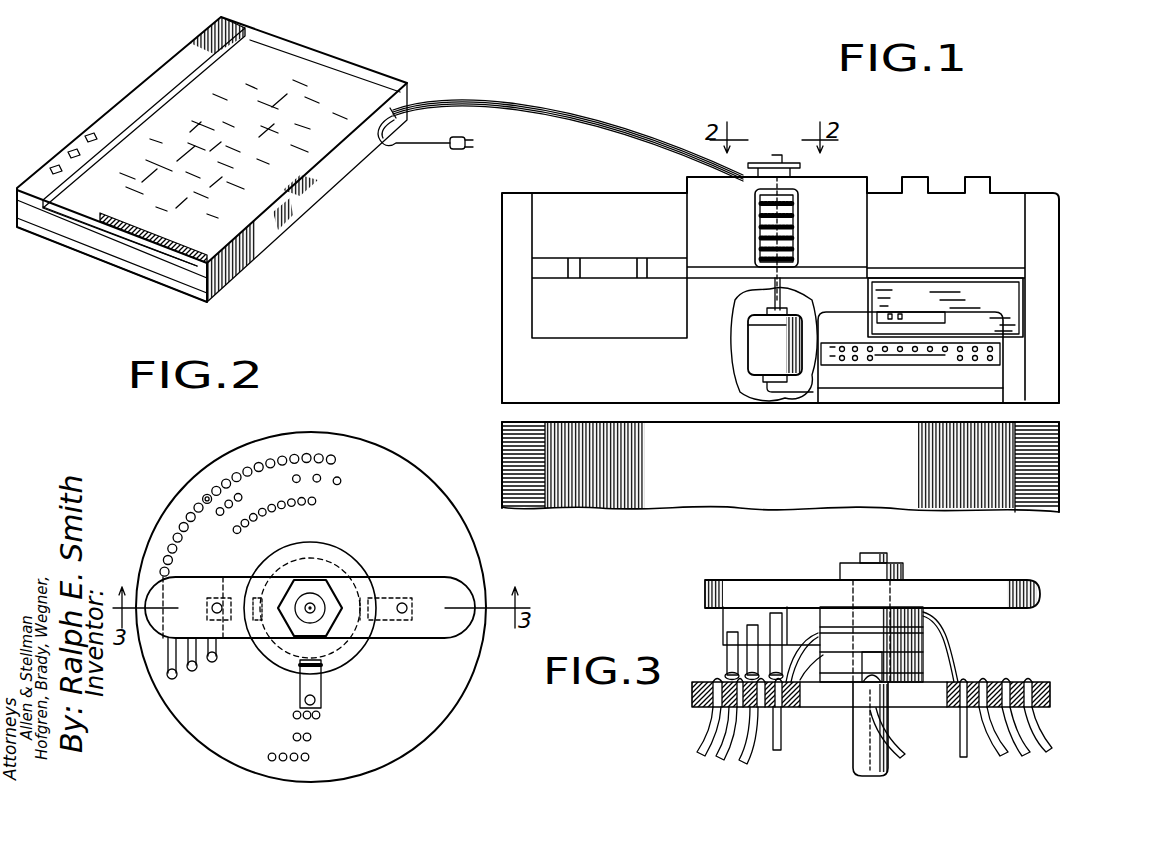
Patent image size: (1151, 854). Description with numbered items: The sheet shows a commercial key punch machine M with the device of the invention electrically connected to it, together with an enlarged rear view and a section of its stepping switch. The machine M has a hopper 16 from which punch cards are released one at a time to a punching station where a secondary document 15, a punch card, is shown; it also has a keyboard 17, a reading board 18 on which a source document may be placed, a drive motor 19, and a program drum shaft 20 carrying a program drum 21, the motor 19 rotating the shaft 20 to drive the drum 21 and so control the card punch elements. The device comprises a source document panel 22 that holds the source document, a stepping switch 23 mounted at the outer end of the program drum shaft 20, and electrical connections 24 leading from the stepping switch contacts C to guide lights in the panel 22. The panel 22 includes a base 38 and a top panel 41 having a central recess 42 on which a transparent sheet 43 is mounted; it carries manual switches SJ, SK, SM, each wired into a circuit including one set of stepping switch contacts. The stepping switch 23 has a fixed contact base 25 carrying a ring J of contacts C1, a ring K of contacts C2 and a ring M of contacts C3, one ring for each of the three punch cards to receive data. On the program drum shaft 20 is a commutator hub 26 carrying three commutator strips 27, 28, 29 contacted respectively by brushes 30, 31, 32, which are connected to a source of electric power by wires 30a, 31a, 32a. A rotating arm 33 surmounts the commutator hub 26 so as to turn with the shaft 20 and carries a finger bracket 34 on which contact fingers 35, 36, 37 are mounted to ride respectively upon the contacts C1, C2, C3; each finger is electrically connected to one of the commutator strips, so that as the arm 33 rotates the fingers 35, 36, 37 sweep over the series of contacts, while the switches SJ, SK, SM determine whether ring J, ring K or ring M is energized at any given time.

In FIG. 1, the source document panel 22 is at (228, 167).
In FIG. 1, the top panel 41 is at (187, 60).
In FIG. 1, the central recess 42 is at (245, 42).
In FIG. 1, the transparent sheet 43 is at (310, 62).
In FIG. 1, the base 38 is at (185, 292).
In FIG. 1, the manual switch SJ is at (90, 133).
In FIG. 1, the manual switch SK is at (72, 150).
In FIG. 1, the manual switch SM is at (53, 168).
In FIG. 1, the electrical connections 24 is at (603, 112).
In FIG. 1, the machine M is at (808, 305).
In FIG. 2, the machine M is at (316, 500).
In FIG. 1, the hopper 16 is at (1003, 193).
In FIG. 1, the secondary document 15 is at (1010, 295).
In FIG. 1, the keyboard 17 is at (920, 390).
In FIG. 1, the reading board 18 is at (587, 403).
In FIG. 1, the drive motor 19 is at (757, 353).
In FIG. 1, the program drum shaft 20 is at (775, 303).
In FIG. 2, the program drum shaft 20 is at (309, 606).
In FIG. 3, the program drum shaft 20 is at (853, 753).
In FIG. 1, the program drum 21 is at (755, 208).
In FIG. 1, the stepping switch 23 is at (771, 156).
In FIG. 2, the stepping switch 23 is at (349, 434).
In FIG. 3, the stepping switch 23 is at (771, 572).
In FIG. 2, the fixed contact base 25 is at (400, 472).
In FIG. 3, the fixed contact base 25 is at (1052, 696).
In FIG. 2, the ring of contacts J is at (268, 447).
In FIG. 2, the stepping switch contacts C is at (207, 492).
In FIG. 3, the stepping switch contacts C is at (714, 682).
In FIG. 2, the ring of contacts K is at (341, 481).
In FIG. 2, the contacts C2 is at (242, 499).
In FIG. 3, the contacts C2 is at (1008, 683).
In FIG. 2, the contacts C3 is at (248, 525).
In FIG. 3, the contacts C3 is at (984, 683).
In FIG. 3, the contacts C1 is at (1031, 683).
In FIG. 2, the finger bracket 34 is at (163, 593).
In FIG. 3, the finger bracket 34 is at (727, 615).
In FIG. 2, the brush 31 is at (238, 638).
In FIG. 3, the brush 31 is at (820, 692).
In FIG. 2, the brush 32 is at (384, 637).
In FIG. 3, the brush 32 is at (928, 617).
In FIG. 2, the contact finger 35 is at (170, 655).
In FIG. 3, the contact finger 35 is at (729, 651).
In FIG. 2, the contact finger 36 is at (192, 672).
In FIG. 3, the contact finger 36 is at (747, 630).
In FIG. 2, the contact finger 37 is at (216, 660).
In FIG. 3, the contact finger 37 is at (777, 612).
In FIG. 2, the brush 30 is at (321, 687).
In FIG. 3, the brush 30 is at (866, 668).
In FIG. 3, the rotating arm 33 is at (705, 585).
In FIG. 3, the commutator strip 29 is at (897, 618).
In FIG. 3, the commutator hub 26 is at (818, 629).
In FIG. 3, the commutator strip 28 is at (922, 641).
In FIG. 3, the commutator strip 27 is at (922, 663).
In FIG. 3, the wire 30a is at (891, 755).
In FIG. 3, the wire 31a is at (776, 752).
In FIG. 3, the wire 32a is at (963, 757).